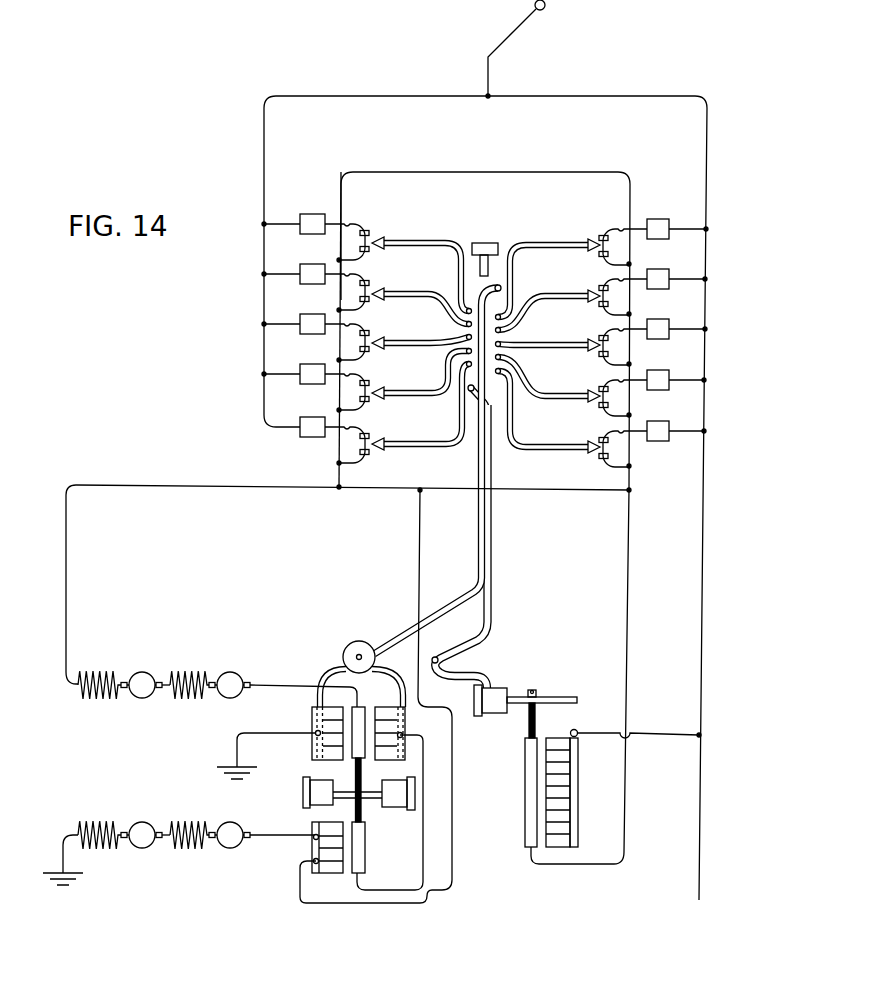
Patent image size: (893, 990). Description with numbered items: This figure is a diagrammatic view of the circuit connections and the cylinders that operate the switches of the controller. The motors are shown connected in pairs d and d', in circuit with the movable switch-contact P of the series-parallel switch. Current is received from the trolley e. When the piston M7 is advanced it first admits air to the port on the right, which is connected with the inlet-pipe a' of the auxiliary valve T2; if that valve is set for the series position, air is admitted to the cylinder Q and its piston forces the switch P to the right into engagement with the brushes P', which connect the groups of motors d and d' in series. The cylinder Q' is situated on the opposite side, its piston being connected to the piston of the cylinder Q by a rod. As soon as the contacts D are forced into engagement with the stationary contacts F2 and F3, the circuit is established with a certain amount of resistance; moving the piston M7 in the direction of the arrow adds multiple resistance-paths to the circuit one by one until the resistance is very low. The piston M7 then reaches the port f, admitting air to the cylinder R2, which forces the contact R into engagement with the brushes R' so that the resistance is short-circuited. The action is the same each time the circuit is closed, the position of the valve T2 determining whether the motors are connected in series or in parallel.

The trolley e is at (517, 48).
The stationary contact F2 is at (364, 230).
The stationary contact F3 is at (369, 254).
The contact D is at (373, 234).
The piston M7 is at (505, 245).
The port f is at (471, 392).
The auxiliary valve T2 is at (358, 641).
The inlet-pipe a' is at (436, 471).
The cylinder R2 is at (498, 695).
The motor pair d' is at (164, 667).
The motor pair d is at (146, 853).
The cylinder Q is at (299, 792).
The cylinder Q' is at (398, 813).
The series-parallel switch P is at (368, 790).
The contact-brush P' is at (406, 733).
The resistance short-circuiting switch R is at (512, 792).
The brush R' is at (579, 789).